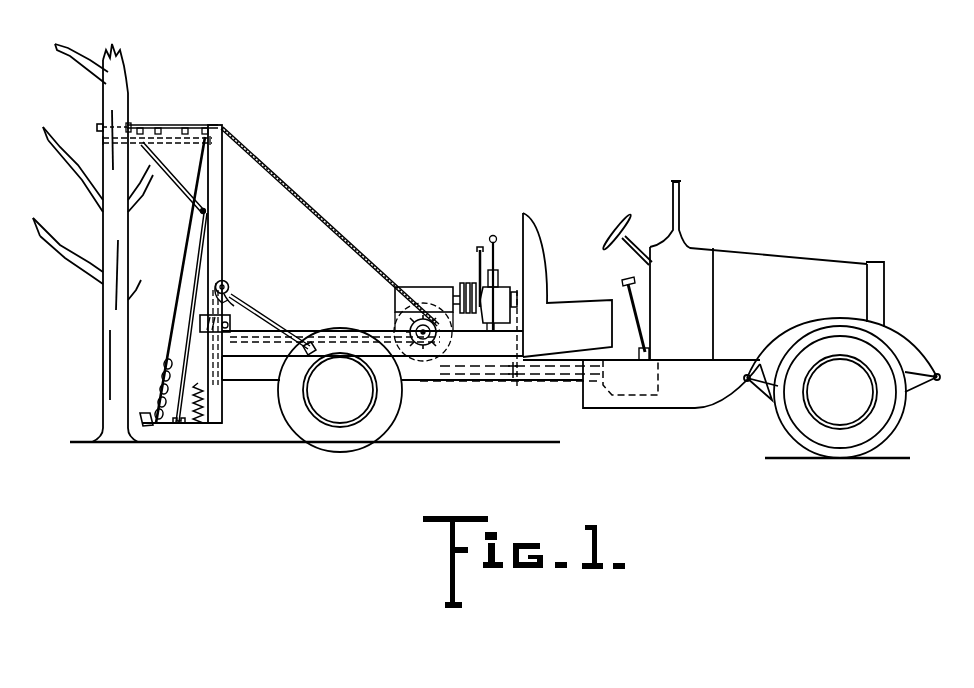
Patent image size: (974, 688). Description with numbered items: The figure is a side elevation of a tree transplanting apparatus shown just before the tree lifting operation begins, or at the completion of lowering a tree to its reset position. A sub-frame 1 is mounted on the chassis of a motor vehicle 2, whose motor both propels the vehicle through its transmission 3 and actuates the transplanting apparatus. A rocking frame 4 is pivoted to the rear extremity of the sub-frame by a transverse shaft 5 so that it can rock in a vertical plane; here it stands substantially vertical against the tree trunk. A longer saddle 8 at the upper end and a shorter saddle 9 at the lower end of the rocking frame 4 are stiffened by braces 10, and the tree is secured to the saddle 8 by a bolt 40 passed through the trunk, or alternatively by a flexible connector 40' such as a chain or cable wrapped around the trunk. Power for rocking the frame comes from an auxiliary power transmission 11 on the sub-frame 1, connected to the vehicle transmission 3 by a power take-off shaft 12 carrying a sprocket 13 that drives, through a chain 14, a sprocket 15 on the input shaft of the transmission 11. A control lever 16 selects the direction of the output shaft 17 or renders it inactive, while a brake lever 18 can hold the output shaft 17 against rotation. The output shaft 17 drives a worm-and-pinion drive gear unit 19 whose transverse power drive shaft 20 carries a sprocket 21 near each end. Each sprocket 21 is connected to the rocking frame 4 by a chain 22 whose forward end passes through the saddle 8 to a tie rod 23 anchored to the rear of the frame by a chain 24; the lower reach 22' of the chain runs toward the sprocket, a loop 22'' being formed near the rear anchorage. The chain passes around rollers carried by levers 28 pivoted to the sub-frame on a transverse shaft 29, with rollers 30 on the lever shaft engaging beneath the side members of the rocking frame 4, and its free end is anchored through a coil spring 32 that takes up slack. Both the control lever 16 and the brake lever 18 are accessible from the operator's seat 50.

The sub-frame 1 is at (246, 355).
The motor vehicle 2 is at (750, 254).
The transmission 3 is at (655, 381).
The rocking frame 4 is at (223, 233).
The transverse shaft 5 is at (231, 325).
The saddle 8 is at (185, 125).
The saddle 9 is at (182, 425).
The braces 10 is at (183, 194).
The auxiliary power transmission 11 is at (498, 292).
The power take-off shaft 12 is at (530, 376).
The sprocket 13 is at (508, 375).
The chain 14 is at (510, 325).
The sprocket 15 is at (518, 299).
The control lever 16 is at (497, 246).
The output shaft 17 is at (466, 287).
The brake lever 18 is at (478, 262).
The drive gear unit 19 is at (420, 287).
The power drive shaft 20 is at (432, 336).
The sprocket 21 is at (410, 327).
The chain 22 is at (330, 226).
The lower reach 22' is at (335, 324).
The loop 22'' is at (250, 298).
The tie rod 23 is at (181, 290).
The chain 24 is at (165, 380).
The levers 28 is at (269, 317).
The transverse shaft 29 is at (305, 357).
The rollers 30 is at (228, 285).
The coil springs 32 is at (194, 400).
The bolt 40 is at (101, 115).
The flexible connector 40' is at (141, 141).
The operator's seat 50 is at (542, 242).